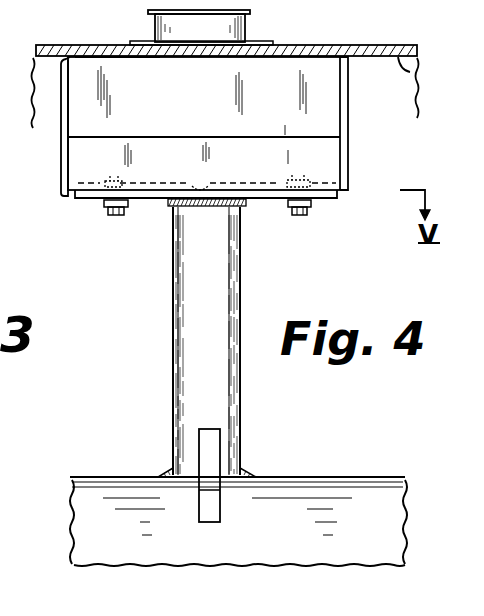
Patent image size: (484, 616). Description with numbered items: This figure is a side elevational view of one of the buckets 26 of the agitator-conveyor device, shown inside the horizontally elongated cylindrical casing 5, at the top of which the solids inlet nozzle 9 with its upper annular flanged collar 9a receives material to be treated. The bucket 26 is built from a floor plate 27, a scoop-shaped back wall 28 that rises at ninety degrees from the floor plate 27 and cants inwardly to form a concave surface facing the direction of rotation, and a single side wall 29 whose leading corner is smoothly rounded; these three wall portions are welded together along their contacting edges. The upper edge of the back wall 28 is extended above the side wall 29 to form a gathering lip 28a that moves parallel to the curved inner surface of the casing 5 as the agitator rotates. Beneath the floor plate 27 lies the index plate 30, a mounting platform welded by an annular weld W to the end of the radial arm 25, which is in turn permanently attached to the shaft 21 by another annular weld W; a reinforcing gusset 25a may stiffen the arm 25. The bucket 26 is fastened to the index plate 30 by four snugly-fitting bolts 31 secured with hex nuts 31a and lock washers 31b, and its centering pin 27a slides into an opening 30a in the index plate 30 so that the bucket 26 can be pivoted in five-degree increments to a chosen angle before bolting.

The cylindrical casing 5 is at (417, 73).
The solids inlet nozzle 9 is at (155, 30).
The upper annular flanged collar 9a is at (250, 12).
The shaft 21 is at (75, 477).
The radial arm 25 is at (173, 293).
The reinforcing gusset 25a is at (205, 452).
The bucket 26 is at (410, 173).
The floor plate 27 is at (321, 186).
The centering pin 27a is at (286, 183).
The back wall 28 is at (330, 92).
The gathering lip 28a is at (120, 58).
The side wall 29 is at (60, 158).
The index plate 30 is at (275, 200).
The opening 30a is at (194, 185).
The bolt 31 is at (106, 180).
The hex nut 31a is at (104, 212).
The lock washer 31b is at (102, 203).
The annular weld W is at (170, 206).